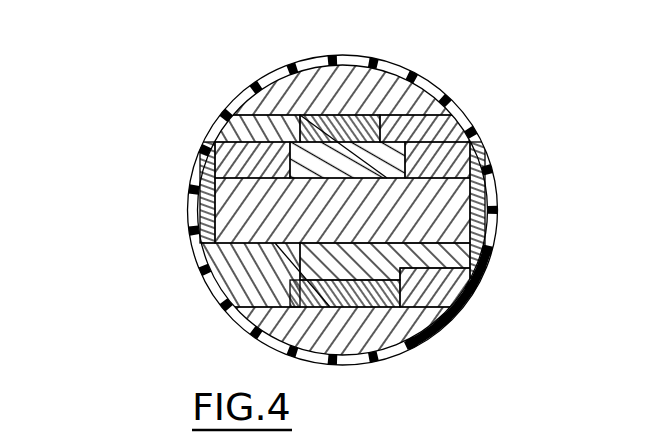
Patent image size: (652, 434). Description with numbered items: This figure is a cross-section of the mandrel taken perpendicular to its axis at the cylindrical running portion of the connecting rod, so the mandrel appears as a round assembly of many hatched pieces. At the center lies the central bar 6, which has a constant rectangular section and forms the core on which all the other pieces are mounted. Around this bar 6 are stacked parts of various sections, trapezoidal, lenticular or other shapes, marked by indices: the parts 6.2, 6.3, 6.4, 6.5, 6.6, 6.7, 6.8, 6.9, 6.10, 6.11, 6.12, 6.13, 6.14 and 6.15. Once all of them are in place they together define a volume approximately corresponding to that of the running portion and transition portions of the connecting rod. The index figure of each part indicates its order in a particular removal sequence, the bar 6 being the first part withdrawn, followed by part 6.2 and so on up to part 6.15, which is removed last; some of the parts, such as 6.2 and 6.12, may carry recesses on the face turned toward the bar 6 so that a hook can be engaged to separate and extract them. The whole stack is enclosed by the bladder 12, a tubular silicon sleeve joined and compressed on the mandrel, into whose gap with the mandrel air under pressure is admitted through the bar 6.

The central bar 6 is at (440, 218).
The peripheral mandrel part 6.2 is at (363, 165).
The peripheral mandrel part 6.3 is at (370, 257).
The peripheral mandrel part 6.4 is at (335, 128).
The peripheral mandrel part 6.5 is at (357, 290).
The peripheral mandrel part 6.6 is at (237, 163).
The peripheral mandrel part 6.7 is at (417, 148).
The peripheral mandrel part 6.8 is at (410, 128).
The peripheral mandrel part 6.9 is at (255, 128).
The peripheral mandrel part 6.10 is at (245, 273).
The peripheral mandrel part 6.11 is at (448, 257).
The peripheral mandrel part 6.12 is at (285, 100).
The peripheral mandrel part 6.13 is at (372, 327).
The peripheral mandrel part 6.14 is at (207, 212).
The peripheral mandrel part 6.15 is at (478, 200).
The bladder 12 is at (230, 310).